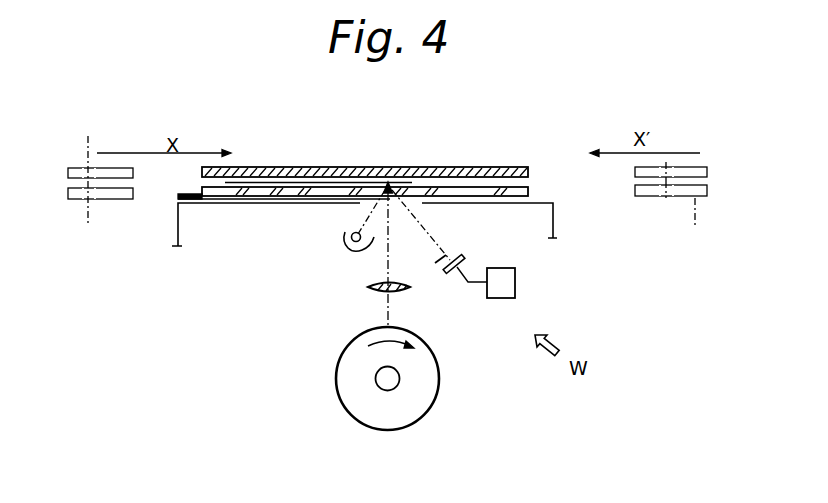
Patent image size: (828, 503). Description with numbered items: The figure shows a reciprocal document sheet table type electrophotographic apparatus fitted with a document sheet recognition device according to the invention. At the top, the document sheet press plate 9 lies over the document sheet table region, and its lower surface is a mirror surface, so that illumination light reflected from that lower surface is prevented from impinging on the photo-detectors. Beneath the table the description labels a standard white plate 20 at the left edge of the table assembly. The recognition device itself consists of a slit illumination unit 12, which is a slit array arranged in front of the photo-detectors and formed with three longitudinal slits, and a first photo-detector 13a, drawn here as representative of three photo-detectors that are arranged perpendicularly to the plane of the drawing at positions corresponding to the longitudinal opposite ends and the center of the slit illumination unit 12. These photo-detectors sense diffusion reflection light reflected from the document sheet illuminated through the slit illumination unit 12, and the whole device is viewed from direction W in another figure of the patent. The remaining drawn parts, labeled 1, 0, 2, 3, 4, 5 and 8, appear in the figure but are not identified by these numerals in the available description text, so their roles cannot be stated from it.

The document sheet press plate 9 is at (705, 166).
The lower plate 1 is at (310, 197).
The sample 0 is at (330, 182).
The standard white plate 20 is at (180, 197).
The frame 2 is at (397, 201).
The light source 3 is at (343, 250).
The lens 4 is at (370, 290).
The drum 5 is at (340, 372).
The slit illumination unit 12 is at (452, 250).
The first photo-detector 13a is at (463, 260).
The detector 8 is at (498, 300).